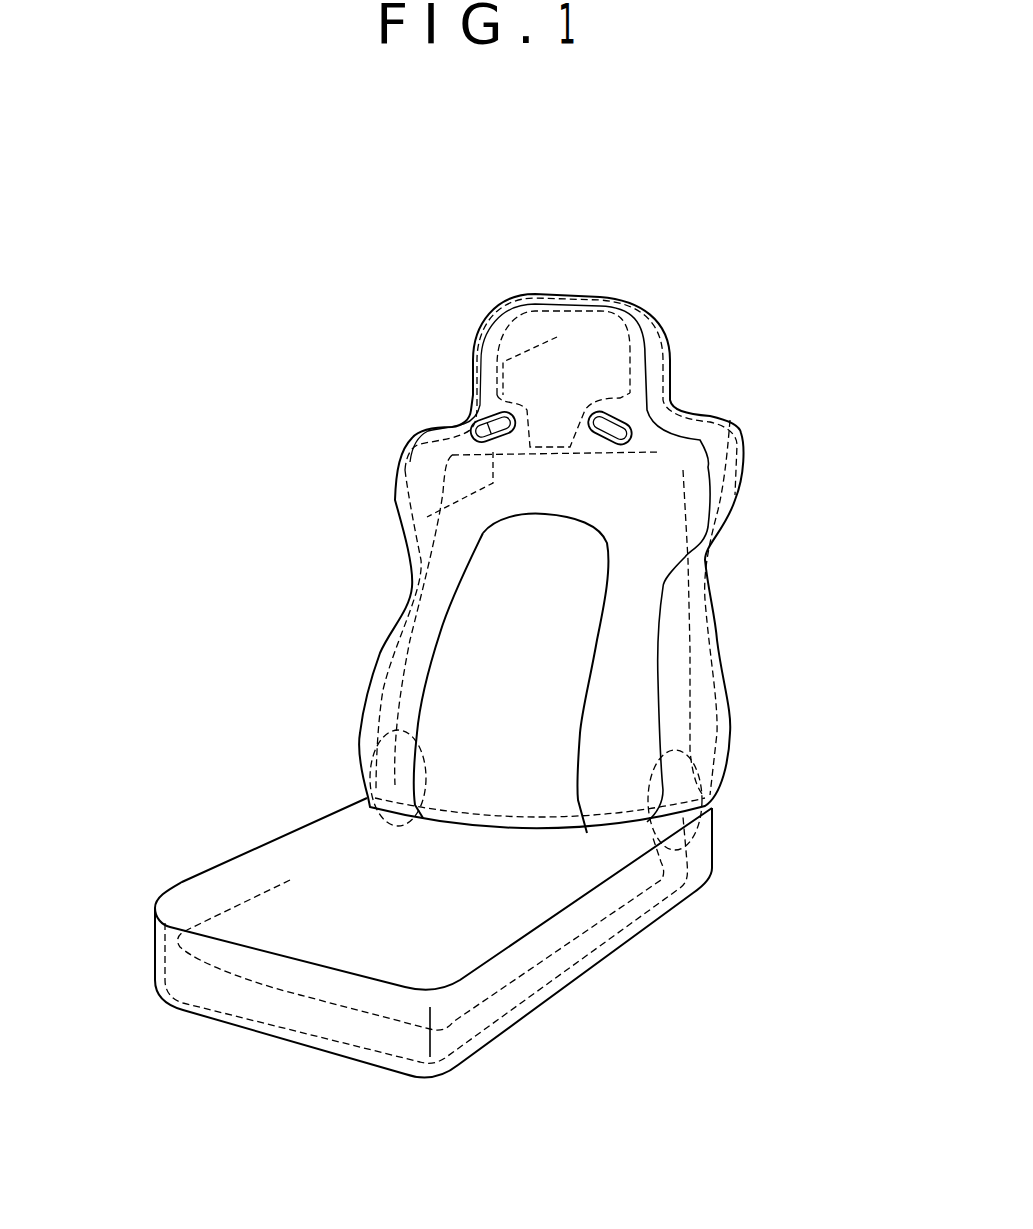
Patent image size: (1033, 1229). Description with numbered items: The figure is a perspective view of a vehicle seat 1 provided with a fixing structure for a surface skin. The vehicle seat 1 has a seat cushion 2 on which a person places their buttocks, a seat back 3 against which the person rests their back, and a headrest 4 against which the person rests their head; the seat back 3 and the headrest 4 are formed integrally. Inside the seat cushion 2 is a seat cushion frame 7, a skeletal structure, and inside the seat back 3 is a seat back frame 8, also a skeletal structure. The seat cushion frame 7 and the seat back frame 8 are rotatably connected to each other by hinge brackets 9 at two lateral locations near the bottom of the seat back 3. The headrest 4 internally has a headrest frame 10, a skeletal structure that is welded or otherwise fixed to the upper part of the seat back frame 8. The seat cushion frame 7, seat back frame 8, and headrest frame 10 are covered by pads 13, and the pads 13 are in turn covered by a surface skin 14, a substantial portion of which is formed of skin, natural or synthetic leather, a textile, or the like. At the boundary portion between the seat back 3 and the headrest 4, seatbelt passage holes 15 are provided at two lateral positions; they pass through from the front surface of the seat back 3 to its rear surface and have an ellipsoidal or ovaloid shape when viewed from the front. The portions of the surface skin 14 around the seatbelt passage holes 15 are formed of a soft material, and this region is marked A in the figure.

The vehicle seat 1 is at (293, 229).
The seat cushion 2 is at (107, 833).
The seat back 3 is at (342, 420).
The headrest 4 is at (383, 280).
The seat cushion frame 7 is at (328, 1005).
The seat back frame 8 is at (690, 648).
The hinge brackets 9 is at (420, 760).
The headrest frame 10 is at (507, 332).
The pads 13 is at (657, 340).
The surface skin 14 is at (498, 437).
The seatbelt passage holes 15 is at (484, 413).
The region A is at (550, 357).